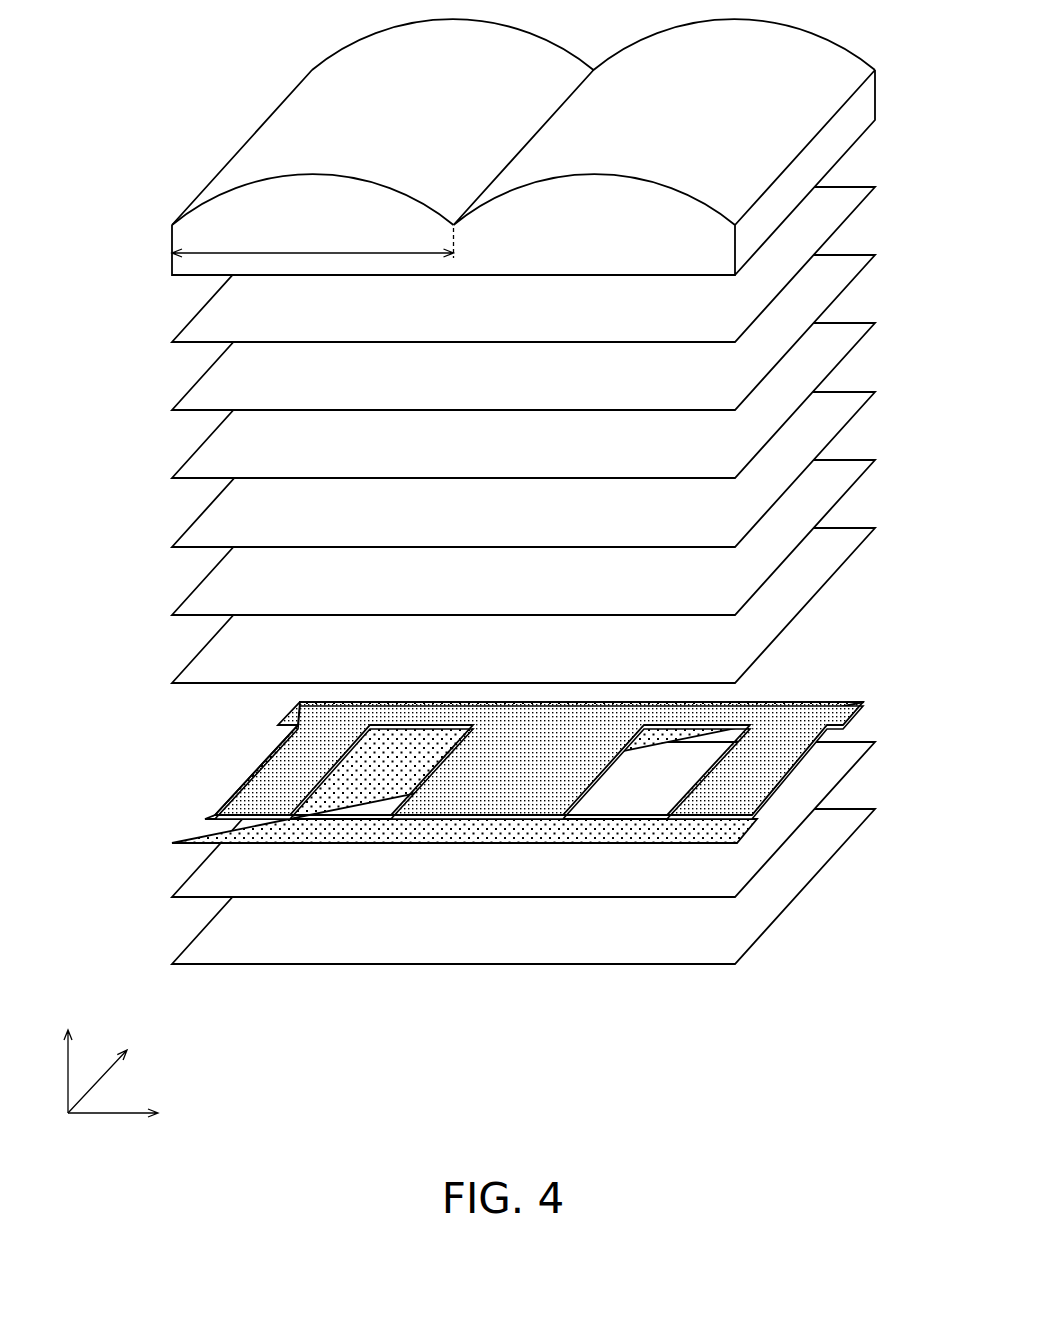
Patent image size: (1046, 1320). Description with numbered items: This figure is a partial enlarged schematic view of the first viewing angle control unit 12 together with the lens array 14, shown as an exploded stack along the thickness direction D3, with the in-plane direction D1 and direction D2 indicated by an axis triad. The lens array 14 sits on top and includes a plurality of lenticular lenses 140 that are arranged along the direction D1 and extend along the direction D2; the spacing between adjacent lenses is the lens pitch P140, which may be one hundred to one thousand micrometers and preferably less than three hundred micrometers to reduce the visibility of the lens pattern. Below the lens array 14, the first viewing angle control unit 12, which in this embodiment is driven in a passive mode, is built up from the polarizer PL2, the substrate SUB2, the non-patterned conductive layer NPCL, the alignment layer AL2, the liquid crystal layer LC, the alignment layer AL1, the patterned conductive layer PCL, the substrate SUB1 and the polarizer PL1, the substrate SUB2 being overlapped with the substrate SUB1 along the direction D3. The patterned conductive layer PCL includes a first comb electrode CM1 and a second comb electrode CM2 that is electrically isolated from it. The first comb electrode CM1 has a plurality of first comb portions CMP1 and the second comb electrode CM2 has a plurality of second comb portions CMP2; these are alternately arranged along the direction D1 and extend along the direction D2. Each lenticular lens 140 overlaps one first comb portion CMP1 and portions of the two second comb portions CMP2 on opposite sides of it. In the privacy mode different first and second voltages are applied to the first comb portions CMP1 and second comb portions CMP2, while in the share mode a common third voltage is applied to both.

The lens array 14 is at (537, 147).
The lenticular lens 140 is at (210, 222).
The lens pitch P140 is at (313, 241).
The first viewing angle control unit 12 is at (501, 613).
The polarizer PL2 is at (207, 333).
The substrate SUB2 is at (207, 402).
The non-patterned conductive layer NPCL is at (207, 470).
The alignment layer AL2 is at (207, 538).
The liquid crystal layer LC is at (207, 606).
The alignment layer AL1 is at (207, 674).
The patterned conductive layer PCL is at (458, 871).
The second comb electrode CM2 is at (275, 779).
The first comb electrode CM1 is at (203, 831).
The first comb portion CMP1 is at (665, 770).
The second comb portion CMP2 is at (737, 778).
The substrate SUB1 is at (207, 885).
The polarizer PL1 is at (207, 955).
The direction D1 is at (136, 1116).
The direction D2 is at (115, 1063).
The direction D3 is at (68, 1051).